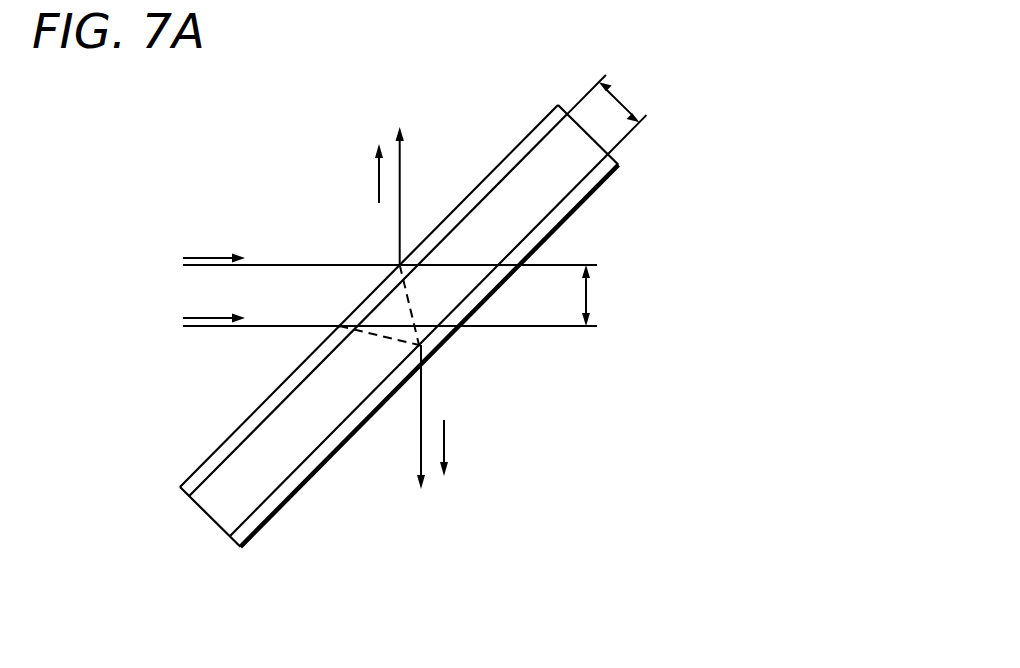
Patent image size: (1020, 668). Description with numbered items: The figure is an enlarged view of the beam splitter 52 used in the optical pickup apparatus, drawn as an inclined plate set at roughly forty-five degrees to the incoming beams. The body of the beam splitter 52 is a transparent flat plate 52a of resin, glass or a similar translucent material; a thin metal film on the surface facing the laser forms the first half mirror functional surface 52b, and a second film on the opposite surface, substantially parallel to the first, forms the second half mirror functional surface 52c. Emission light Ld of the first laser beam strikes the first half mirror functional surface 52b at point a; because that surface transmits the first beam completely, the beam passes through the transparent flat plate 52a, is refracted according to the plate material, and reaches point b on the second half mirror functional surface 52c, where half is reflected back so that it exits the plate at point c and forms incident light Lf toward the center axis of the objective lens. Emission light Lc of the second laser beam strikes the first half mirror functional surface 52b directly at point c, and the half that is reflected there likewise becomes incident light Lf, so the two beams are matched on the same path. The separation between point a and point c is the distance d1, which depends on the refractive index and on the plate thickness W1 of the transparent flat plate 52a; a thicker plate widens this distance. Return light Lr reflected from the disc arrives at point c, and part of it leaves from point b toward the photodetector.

The beam splitter 52 is at (368, 337).
The transparent flat plate 52a is at (200, 512).
The first half mirror functional surface 52b is at (195, 473).
The second half mirror functional surface 52c is at (265, 527).
The point a is at (339, 326).
The point b is at (422, 349).
The point c is at (400, 265).
The distance d1 is at (602, 295).
The plate thickness W1 is at (619, 114).
The incident light Lf is at (376, 196).
The return light Lr is at (445, 417).
The emission light Lc is at (214, 248).
The emission light Ld is at (214, 308).